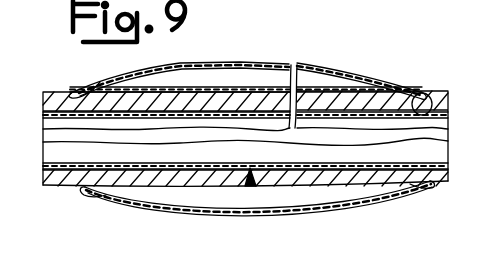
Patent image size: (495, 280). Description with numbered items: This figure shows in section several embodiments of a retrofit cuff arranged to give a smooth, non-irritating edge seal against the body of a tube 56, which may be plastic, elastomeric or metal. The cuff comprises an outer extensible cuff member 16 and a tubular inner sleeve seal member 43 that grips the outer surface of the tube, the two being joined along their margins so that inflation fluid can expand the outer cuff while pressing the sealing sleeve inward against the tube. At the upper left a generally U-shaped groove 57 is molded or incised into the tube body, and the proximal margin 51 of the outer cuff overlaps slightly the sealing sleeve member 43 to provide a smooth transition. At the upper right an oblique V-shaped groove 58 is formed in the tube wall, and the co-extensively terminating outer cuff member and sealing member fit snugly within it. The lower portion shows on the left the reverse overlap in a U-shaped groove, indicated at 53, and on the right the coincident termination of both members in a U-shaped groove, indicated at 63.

The outer extensible cuff member 16 is at (215, 62).
The inner sleeve seal member 43 is at (215, 87).
The proximal margin 51 is at (72, 93).
The left end of lower band 53 is at (80, 182).
The tube 56 is at (256, 100).
The U-shaped groove 57 is at (72, 115).
The oblique V-shaped groove 58 is at (432, 102).
The right end of lower band 63 is at (488, 177).